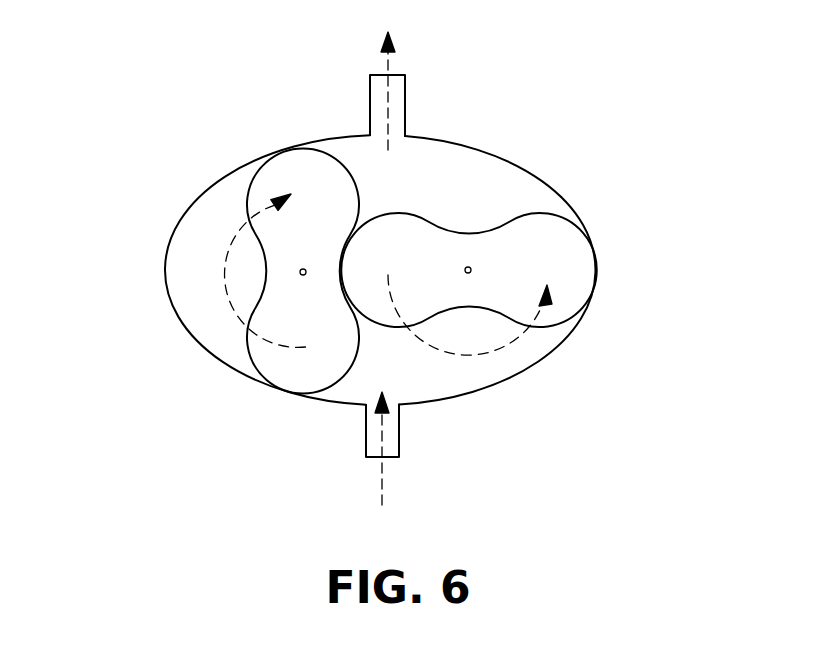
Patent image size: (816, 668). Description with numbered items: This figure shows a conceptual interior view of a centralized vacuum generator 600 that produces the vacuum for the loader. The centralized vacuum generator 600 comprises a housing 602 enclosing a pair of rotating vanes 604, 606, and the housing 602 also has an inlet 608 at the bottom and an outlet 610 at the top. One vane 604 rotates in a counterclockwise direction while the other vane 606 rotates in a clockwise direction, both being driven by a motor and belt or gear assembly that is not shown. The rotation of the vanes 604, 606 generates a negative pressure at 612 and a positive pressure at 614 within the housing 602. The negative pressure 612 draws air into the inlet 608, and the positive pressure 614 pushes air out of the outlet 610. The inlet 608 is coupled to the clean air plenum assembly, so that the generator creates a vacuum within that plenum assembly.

The centralized vacuum generator 600 is at (157, 441).
The housing 602 is at (170, 242).
The vane 604 is at (570, 277).
The vane 606 is at (285, 172).
The inlet 608 is at (399, 450).
The outlet 610 is at (405, 90).
The negative pressure 612 is at (420, 375).
The positive pressure 614 is at (443, 180).